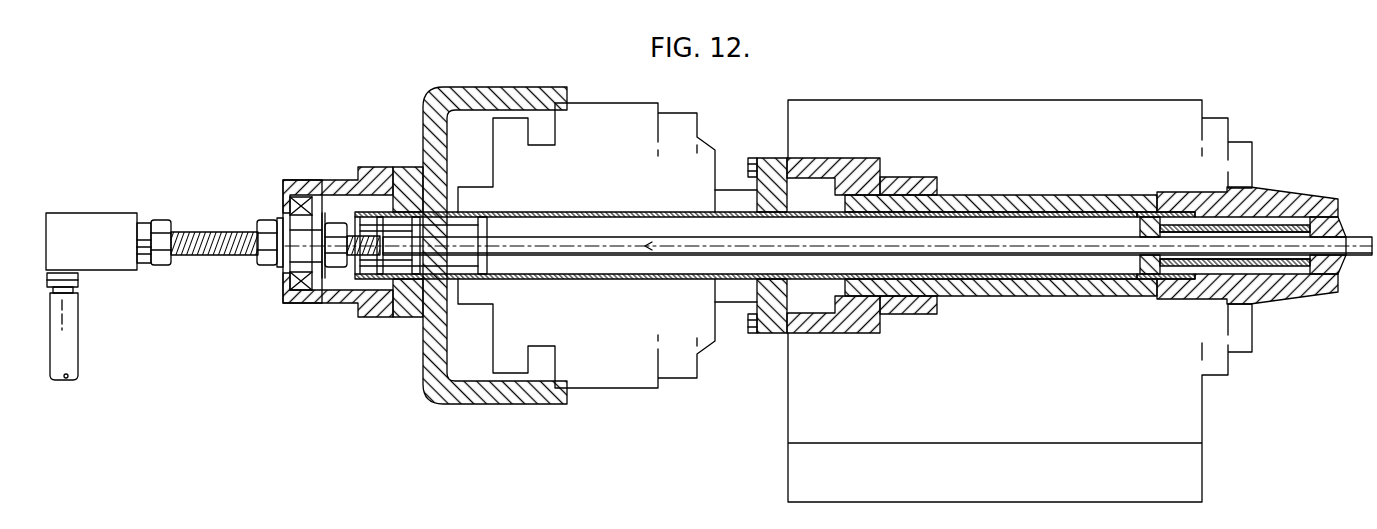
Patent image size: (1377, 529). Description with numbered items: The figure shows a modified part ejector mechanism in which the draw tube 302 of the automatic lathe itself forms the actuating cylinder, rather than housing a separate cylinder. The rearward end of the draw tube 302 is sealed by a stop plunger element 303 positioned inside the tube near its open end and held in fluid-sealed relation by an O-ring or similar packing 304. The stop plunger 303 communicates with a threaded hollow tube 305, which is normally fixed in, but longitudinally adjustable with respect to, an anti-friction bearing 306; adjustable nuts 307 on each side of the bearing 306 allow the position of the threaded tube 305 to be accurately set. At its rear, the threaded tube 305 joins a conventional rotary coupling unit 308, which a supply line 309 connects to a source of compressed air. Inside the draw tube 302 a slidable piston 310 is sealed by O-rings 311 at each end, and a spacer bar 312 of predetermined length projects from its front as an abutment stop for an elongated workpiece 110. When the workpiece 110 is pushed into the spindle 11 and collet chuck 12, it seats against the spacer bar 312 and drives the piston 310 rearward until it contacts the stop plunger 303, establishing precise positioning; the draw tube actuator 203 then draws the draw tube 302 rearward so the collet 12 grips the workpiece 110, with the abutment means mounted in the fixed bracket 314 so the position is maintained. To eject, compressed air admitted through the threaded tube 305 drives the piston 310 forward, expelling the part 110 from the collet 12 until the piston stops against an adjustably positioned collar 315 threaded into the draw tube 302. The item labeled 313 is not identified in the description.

The spindle 11 is at (1280, 198).
The collet chuck 12 is at (1340, 292).
The workpiece 110 is at (1012, 258).
The draw tube actuator 203 is at (618, 142).
The draw tube 302 is at (995, 198).
The stop plunger element 303 is at (380, 271).
The O-ring packing 304 is at (398, 271).
The threaded hollow tube 305 is at (205, 256).
The anti-friction bearing 306 is at (300, 197).
The adjustable nuts 307 is at (268, 220).
The rotary coupling unit 308 is at (73, 222).
The supply line 309 is at (68, 328).
The slidable piston 310 is at (468, 212).
The O-rings 311 is at (417, 271).
The spacer bar 312 is at (590, 249).
The pin 313 is at (655, 243).
The fixed bracket 314 is at (447, 92).
The adjustably positioned collar 315 is at (1148, 272).